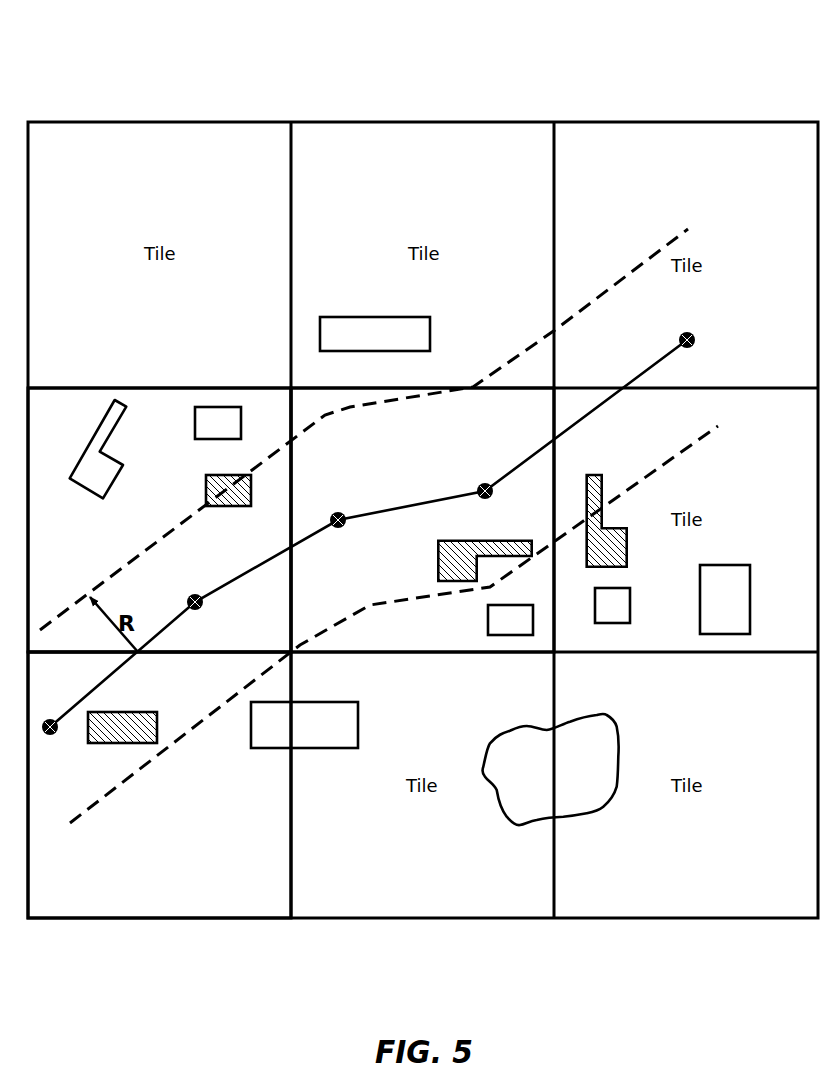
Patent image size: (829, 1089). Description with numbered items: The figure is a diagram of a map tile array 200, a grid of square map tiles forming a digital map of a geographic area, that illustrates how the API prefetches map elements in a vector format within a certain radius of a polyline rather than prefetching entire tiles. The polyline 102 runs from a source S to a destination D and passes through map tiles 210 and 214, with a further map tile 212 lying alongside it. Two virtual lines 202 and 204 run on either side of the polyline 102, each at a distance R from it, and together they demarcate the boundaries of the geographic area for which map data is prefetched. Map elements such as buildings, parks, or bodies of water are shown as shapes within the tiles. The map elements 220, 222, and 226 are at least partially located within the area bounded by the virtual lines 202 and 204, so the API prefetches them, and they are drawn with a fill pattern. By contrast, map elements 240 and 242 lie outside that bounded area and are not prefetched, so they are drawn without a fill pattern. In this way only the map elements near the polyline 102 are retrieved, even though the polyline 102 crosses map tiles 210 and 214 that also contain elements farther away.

The map tile array 200 is at (412, 38).
The virtual line 202 is at (620, 280).
The virtual line 204 is at (700, 442).
The polyline 102 is at (642, 370).
The map tile 210 is at (159, 520).
The map tile 212 is at (159, 785).
The map tile 214 is at (422, 520).
The map element 220 is at (228, 507).
The map element 222 is at (135, 712).
The map element 226 is at (438, 560).
The map element 240 is at (79, 488).
The map element 242 is at (488, 625).